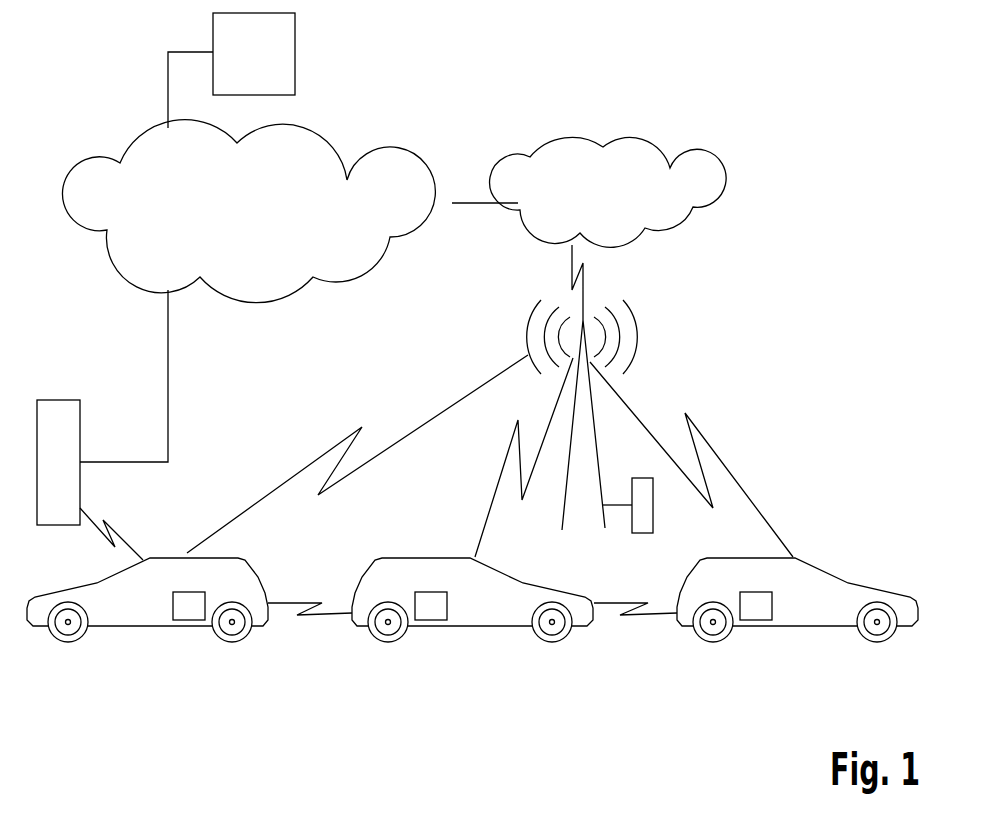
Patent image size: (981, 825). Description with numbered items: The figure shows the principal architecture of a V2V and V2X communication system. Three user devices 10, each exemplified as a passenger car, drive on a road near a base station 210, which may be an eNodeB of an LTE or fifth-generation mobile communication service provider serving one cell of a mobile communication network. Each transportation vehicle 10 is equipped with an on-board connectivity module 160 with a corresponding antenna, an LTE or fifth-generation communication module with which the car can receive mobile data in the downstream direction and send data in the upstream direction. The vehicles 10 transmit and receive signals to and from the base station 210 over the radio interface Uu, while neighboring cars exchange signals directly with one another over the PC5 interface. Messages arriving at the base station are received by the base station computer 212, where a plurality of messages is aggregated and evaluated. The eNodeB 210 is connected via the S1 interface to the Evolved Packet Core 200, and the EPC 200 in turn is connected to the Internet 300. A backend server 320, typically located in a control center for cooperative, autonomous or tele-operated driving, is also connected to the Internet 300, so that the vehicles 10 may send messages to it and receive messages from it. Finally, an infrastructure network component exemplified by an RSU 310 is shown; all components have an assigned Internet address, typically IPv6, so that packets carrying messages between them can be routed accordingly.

The user device 10 is at (117, 627).
The on-board connectivity module 160 is at (192, 620).
The EPC (Evolved Packet Core) 200 is at (561, 137).
The base station 210 is at (593, 408).
The base station computer 212 is at (654, 515).
The Internet 300 is at (385, 171).
The RSU 310 is at (57, 400).
The backend server 320 is at (295, 50).
The S1 interface S1 is at (586, 272).
The Uu interface Uu is at (282, 485).
The PC5 interface PC5 is at (315, 617).